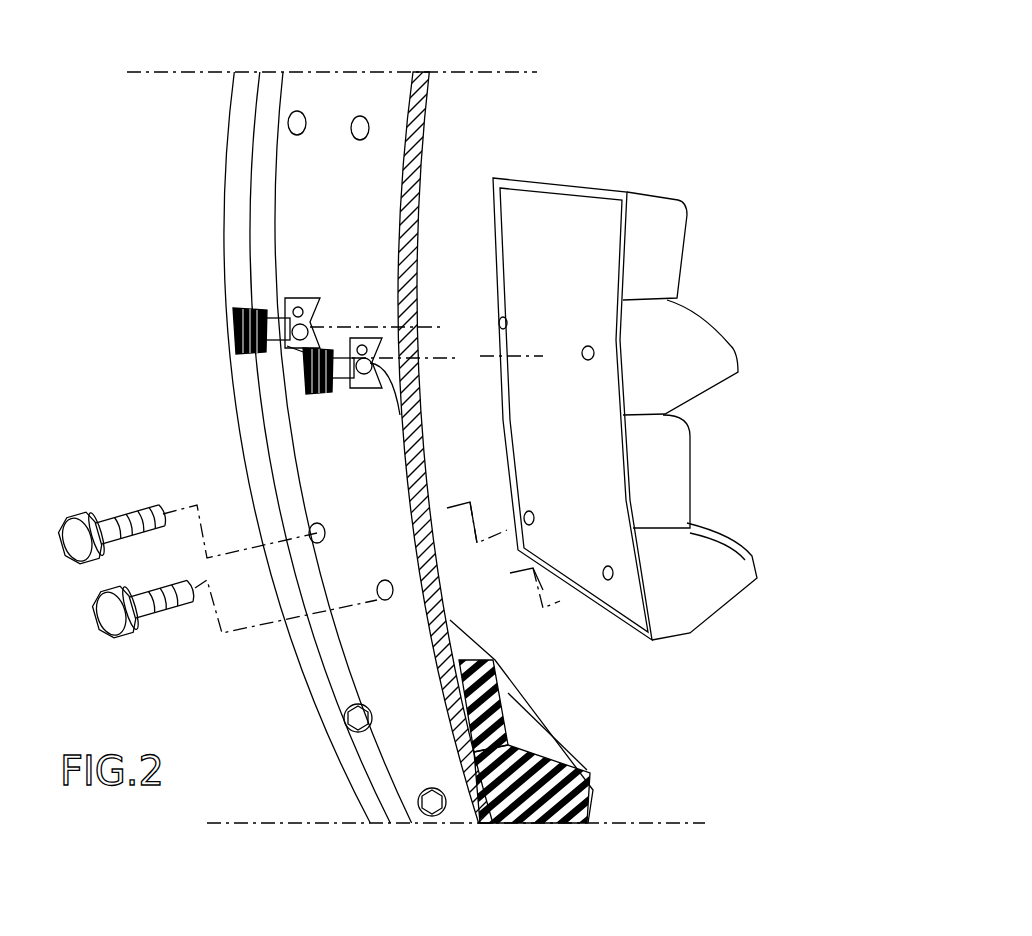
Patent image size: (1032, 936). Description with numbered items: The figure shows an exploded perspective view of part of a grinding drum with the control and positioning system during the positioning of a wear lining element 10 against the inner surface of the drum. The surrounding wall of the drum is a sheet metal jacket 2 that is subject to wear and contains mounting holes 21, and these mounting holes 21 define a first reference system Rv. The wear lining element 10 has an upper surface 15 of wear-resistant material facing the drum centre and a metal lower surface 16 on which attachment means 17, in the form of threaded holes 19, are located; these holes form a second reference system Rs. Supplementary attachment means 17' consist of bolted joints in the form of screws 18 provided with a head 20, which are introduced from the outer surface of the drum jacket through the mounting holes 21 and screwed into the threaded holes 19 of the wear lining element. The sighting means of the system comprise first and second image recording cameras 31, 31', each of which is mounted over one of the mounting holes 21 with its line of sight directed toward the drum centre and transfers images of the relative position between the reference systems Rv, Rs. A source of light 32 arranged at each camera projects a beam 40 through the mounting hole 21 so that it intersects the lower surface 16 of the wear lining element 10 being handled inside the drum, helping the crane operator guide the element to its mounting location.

The first reference system Rv is at (365, 90).
The second reference system Rs is at (612, 237).
The sheet metal jacket 2 is at (312, 238).
The beam 40 is at (450, 330).
The mounting holes 21 is at (385, 580).
The first image recording camera 31 is at (232, 315).
The second image recording camera 31' is at (292, 386).
The lower surface 16 is at (573, 243).
The attachment means 17 is at (558, 562).
The threaded holes 19 is at (588, 360).
The upper surface 15 is at (736, 378).
The wear lining element 10 is at (722, 587).
The head 20 is at (103, 520).
The screws 18 is at (150, 513).
The supplementary attachment means 17' is at (76, 597).
The source of light 32 is at (779, 928).